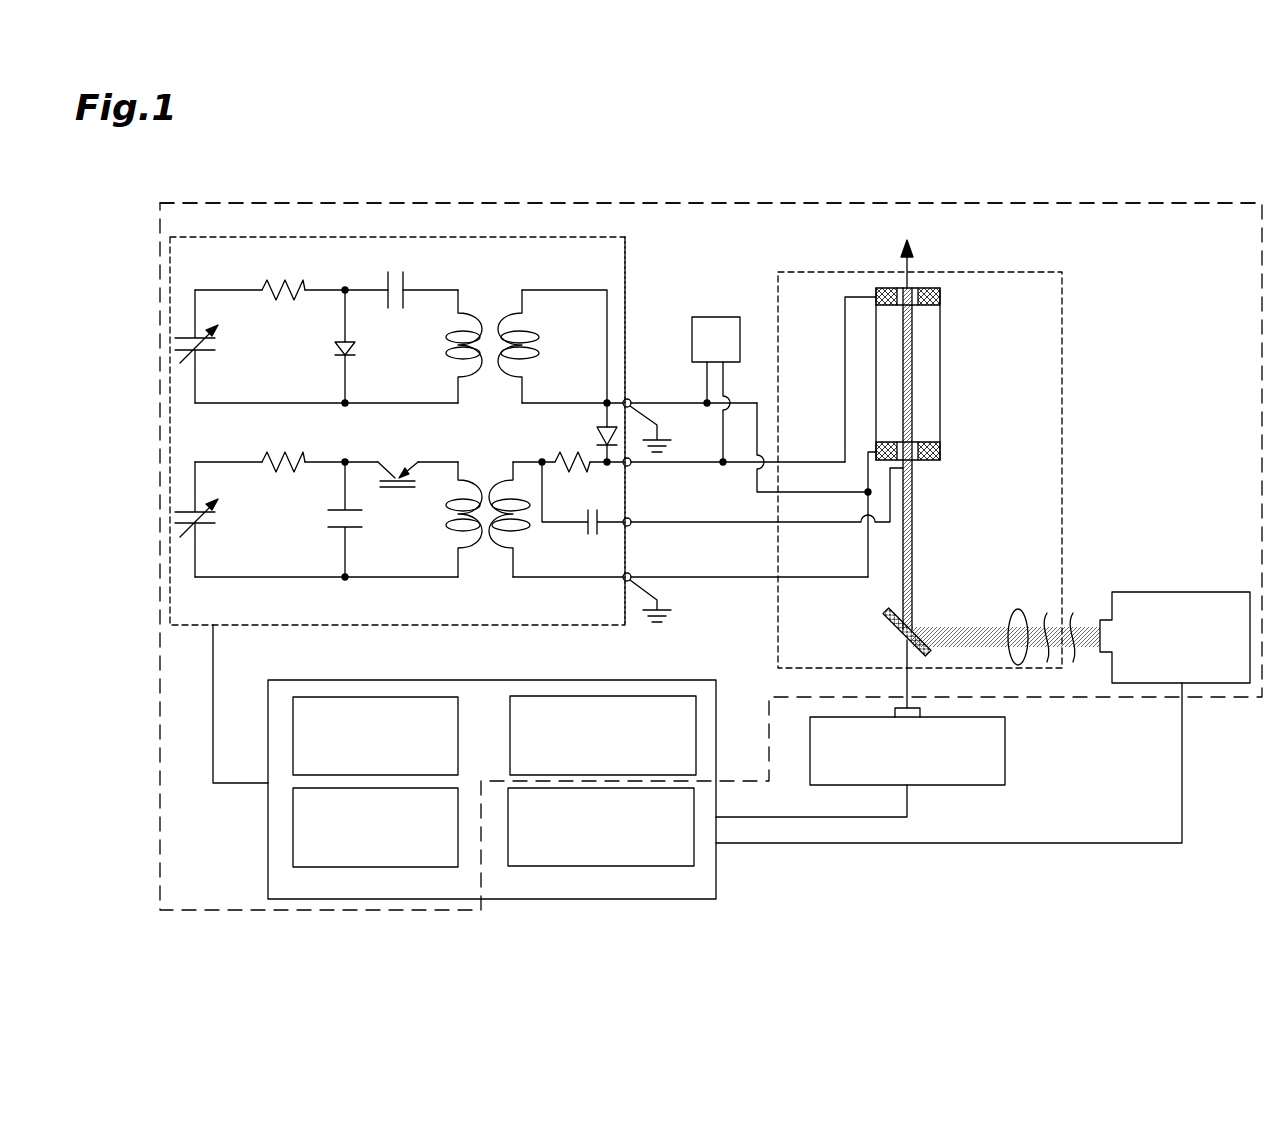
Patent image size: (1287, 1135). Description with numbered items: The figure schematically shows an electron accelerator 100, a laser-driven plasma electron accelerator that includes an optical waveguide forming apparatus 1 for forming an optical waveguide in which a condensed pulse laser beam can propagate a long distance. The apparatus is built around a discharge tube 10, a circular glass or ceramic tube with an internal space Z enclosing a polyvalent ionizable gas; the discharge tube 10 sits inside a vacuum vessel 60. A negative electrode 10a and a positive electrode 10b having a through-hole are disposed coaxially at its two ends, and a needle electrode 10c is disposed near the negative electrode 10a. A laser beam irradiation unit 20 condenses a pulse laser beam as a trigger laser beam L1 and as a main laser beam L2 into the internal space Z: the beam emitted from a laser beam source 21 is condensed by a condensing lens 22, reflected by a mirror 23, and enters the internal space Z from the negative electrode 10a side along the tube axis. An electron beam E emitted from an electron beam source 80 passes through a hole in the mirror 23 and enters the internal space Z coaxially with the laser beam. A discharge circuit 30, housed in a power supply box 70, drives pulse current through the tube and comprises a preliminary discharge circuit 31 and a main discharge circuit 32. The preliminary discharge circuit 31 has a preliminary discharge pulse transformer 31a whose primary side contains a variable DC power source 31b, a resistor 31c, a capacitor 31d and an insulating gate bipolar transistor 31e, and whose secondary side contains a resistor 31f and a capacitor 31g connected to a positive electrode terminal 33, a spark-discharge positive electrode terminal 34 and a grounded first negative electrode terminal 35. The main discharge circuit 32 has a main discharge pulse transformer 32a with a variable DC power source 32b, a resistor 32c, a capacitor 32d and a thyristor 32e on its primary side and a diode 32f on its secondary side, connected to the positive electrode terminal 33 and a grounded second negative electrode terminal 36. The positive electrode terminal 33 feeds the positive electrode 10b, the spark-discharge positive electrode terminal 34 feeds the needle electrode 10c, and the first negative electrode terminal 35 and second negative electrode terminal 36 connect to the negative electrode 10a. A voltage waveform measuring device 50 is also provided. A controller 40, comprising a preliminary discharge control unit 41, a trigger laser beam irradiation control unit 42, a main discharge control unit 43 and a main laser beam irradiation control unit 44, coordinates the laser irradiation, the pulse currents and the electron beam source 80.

The optical waveguide forming apparatus 1 is at (412, 186).
The electron accelerator 100 is at (140, 196).
The discharge tube 10 is at (921, 416).
The negative electrode 10a is at (935, 460).
The positive electrode 10b is at (942, 296).
The needle electrode 10c is at (903, 472).
The internal space Z is at (935, 375).
The laser beam irradiation unit 20 is at (1040, 618).
The laser beam source 21 is at (1175, 600).
The condensing lens 22 is at (1022, 608).
The mirror 23 is at (922, 630).
The discharge circuit 30 is at (116, 405).
The preliminary discharge circuit 31 is at (402, 496).
The preliminary discharge pulse transformer 31a is at (488, 474).
The variable DC power source 31b is at (222, 505).
The resistor 31c is at (265, 460).
The capacitor 31d is at (332, 530).
The insulating gate bipolar transistor 31e is at (396, 470).
The resistor 31f is at (592, 470).
The capacitor 31g is at (586, 532).
The main discharge circuit 32 is at (371, 337).
The main discharge pulse transformer 32a is at (493, 307).
The variable DC power source 32b is at (222, 333).
The resistor 32c is at (262, 288).
The capacitor 32d is at (386, 278).
The thyristor 32e is at (358, 350).
The diode 32f is at (598, 437).
The positive electrode terminal 33 is at (634, 466).
The spark-discharge positive electrode terminal 34 is at (634, 524).
The first negative electrode terminal 35 is at (634, 578).
The second negative electrode terminal 36 is at (632, 400).
The controller 40 is at (499, 766).
The preliminary discharge control unit 41 is at (292, 733).
The trigger laser beam irradiation control unit 42 is at (697, 735).
The main discharge control unit 43 is at (292, 838).
The main laser beam irradiation control unit 44 is at (697, 840).
The voltage waveform measuring device 50 is at (716, 316).
The vacuum vessel 60 is at (826, 270).
The power supply box 70 is at (628, 283).
The electron beam source 80 is at (1005, 745).
The electron beam E is at (900, 654).
The trigger laser beam L1 is at (1035, 685).
The main laser beam L2 is at (1088, 650).